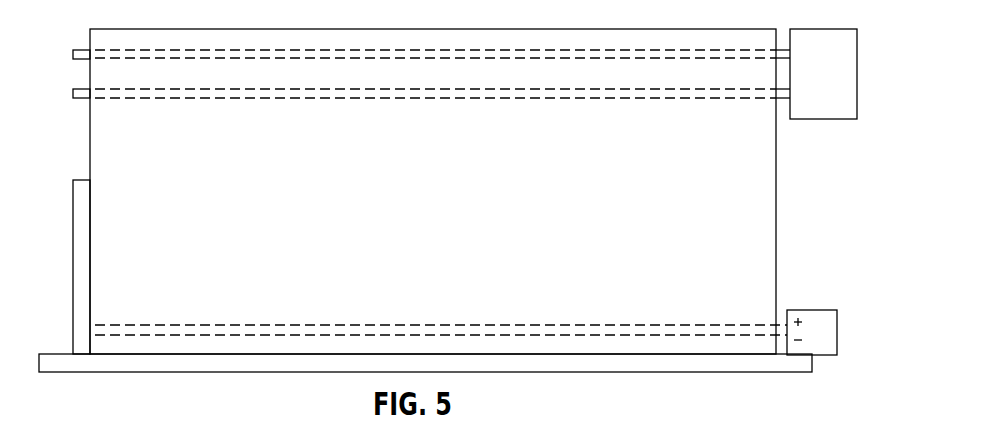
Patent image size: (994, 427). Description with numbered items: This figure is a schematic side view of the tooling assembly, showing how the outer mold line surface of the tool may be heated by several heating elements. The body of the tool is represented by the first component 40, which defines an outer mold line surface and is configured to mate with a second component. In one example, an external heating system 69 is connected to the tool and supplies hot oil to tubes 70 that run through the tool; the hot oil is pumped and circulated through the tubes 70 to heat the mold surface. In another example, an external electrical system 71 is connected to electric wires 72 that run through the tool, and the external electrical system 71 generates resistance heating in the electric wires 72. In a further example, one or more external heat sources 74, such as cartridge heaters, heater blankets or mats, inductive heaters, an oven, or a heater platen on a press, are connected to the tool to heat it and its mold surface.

The first component 40 is at (693, 28).
The external heating system 69 is at (820, 28).
The tubes 70 is at (781, 80).
The external electrical system 71 is at (812, 310).
The electric wires 72 is at (774, 322).
The external heat sources 74 is at (73, 280).